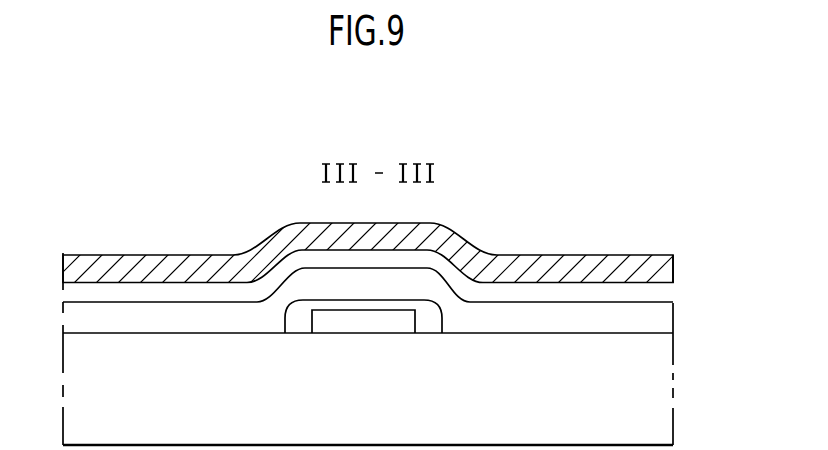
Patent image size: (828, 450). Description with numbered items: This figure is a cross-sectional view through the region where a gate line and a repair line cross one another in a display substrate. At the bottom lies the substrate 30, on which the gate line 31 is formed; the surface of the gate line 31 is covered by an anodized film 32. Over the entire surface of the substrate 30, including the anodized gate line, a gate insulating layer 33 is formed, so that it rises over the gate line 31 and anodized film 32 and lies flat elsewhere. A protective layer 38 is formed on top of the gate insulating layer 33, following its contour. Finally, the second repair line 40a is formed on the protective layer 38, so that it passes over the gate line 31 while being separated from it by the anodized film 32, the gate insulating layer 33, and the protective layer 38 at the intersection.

The substrate 30 is at (655, 382).
The gate line 31 is at (347, 325).
The anodized film 32 is at (432, 325).
The gate insulating layer 33 is at (655, 322).
The protective layer 38 is at (655, 290).
The second repair line 40a is at (655, 268).